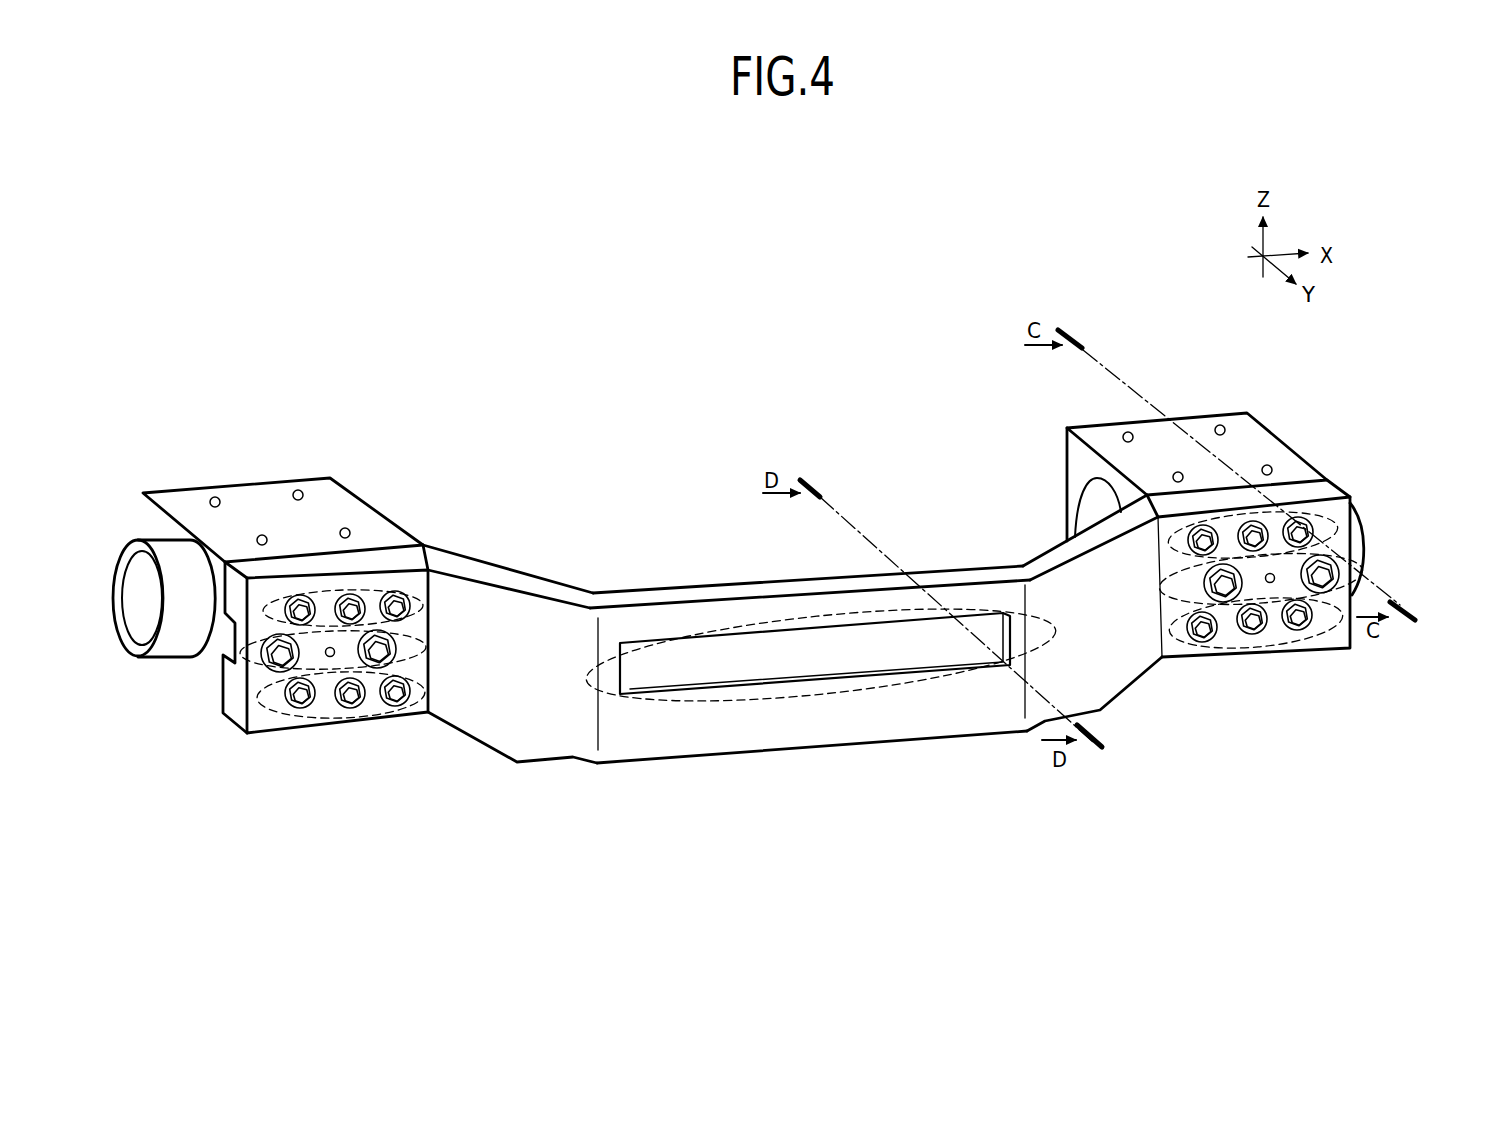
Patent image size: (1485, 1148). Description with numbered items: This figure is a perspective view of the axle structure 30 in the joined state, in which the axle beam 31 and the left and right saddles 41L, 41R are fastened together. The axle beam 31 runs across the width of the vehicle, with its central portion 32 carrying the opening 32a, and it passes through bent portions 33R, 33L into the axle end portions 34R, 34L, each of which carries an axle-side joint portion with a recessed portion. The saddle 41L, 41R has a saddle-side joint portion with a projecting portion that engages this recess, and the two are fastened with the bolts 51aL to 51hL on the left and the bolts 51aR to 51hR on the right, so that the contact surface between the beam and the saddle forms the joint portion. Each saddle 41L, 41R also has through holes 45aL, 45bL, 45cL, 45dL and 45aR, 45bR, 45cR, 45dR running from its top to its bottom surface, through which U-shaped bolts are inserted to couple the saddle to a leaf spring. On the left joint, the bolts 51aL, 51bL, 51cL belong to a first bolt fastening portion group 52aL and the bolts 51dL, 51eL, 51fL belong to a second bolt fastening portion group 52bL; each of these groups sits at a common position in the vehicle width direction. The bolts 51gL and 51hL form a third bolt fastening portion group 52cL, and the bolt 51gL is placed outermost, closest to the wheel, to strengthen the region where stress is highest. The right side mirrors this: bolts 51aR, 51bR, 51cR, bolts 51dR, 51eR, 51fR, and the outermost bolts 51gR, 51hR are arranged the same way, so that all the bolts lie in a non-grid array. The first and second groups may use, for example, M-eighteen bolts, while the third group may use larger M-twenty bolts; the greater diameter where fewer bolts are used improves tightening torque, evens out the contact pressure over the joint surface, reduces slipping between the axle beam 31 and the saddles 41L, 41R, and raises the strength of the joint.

The axle structure 30 is at (829, 358).
The axle beam 31 is at (999, 788).
The central portion 32 is at (872, 723).
The opening 32a is at (755, 626).
The right bent portion 33R is at (543, 673).
The left bent portion 33L is at (1023, 562).
The axle end portion 34R is at (240, 727).
The axle end portion 34L is at (1138, 685).
The saddle 41R is at (268, 507).
The saddle 41L is at (1080, 460).
The through hole 45aR is at (346, 529).
The through hole 45bR is at (262, 535).
The through hole 45cR is at (214, 498).
The through hole 45dR is at (299, 491).
The through hole 45aL is at (1177, 472).
The through hole 45bL is at (1268, 467).
The through hole 45cL is at (1220, 425).
The through hole 45dL is at (1126, 432).
The bolt 51aR is at (302, 700).
The bolt 51bR is at (353, 705).
The bolt 51cR is at (403, 703).
The bolt 51dR is at (301, 603).
The bolt 51eR is at (351, 604).
The bolt 51fR is at (395, 603).
The bolt 51gR is at (276, 656).
The bolt 51hR is at (382, 650).
The bolt 51aL is at (1300, 628).
The bolt 51bL is at (1254, 632).
The bolt 51cL is at (1203, 632).
The bolt 51dL is at (1300, 527).
The bolt 51eL is at (1257, 530).
The bolt 51fL is at (1207, 532).
The bolt 51gL is at (1332, 572).
The bolt 51hL is at (1212, 578).
The first bolt fastening portion group 52aL is at (425, 702).
The second bolt fastening portion group 52bL is at (426, 606).
The third bolt fastening portion group 52cL is at (428, 643).